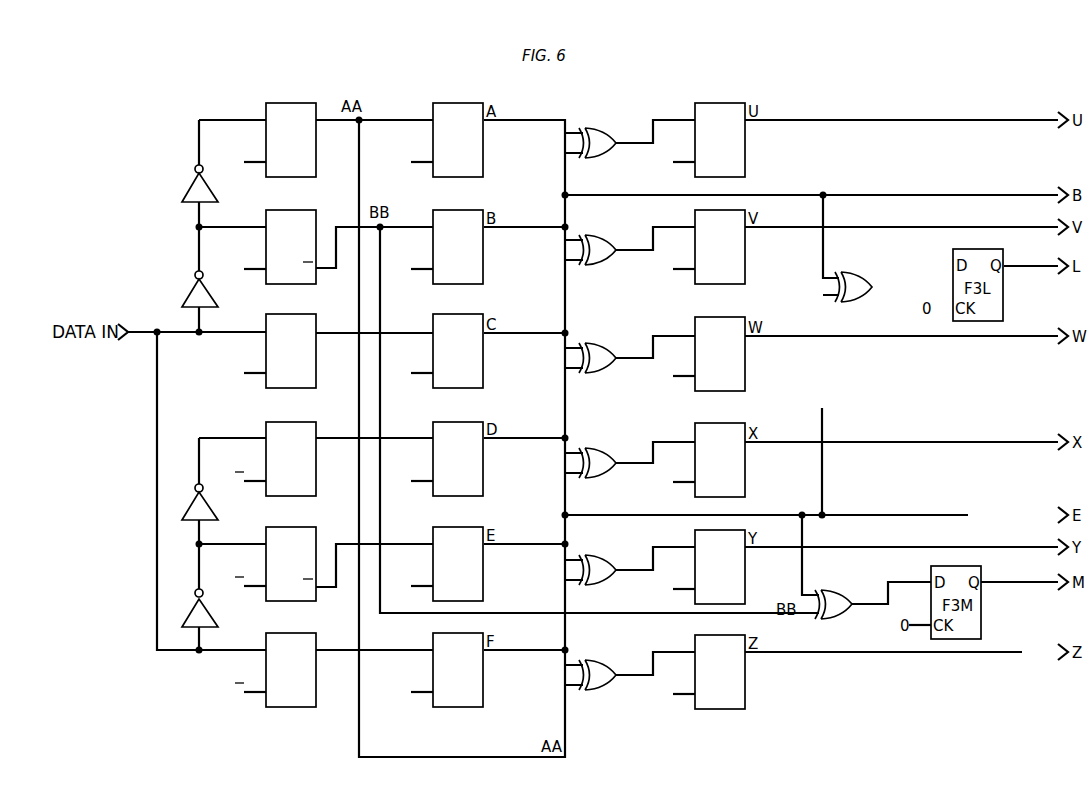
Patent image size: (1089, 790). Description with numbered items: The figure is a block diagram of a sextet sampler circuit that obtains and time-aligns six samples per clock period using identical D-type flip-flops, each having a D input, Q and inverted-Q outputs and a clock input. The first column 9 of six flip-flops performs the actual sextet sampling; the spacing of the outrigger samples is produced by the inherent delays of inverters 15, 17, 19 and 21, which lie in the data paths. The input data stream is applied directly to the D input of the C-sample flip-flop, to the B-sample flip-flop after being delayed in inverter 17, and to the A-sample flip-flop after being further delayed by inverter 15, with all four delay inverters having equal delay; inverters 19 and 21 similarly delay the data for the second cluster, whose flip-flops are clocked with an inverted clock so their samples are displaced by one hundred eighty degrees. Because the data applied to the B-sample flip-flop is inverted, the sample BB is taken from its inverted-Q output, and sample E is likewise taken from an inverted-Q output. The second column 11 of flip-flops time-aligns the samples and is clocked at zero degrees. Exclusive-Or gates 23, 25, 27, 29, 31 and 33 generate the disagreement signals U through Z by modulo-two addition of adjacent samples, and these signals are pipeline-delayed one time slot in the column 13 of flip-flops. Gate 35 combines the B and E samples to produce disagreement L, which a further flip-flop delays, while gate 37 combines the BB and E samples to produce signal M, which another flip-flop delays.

The first column of flip-flops 9 is at (290, 93).
The second column of flip-flops 11 is at (458, 93).
The column of flip-flops 13 is at (722, 93).
The inverter 15 is at (189, 185).
The inverter 17 is at (189, 291).
The inverter 19 is at (189, 504).
The inverter 21 is at (189, 609).
The Exclusive-Or gate 23 is at (605, 132).
The Exclusive-Or gate 25 is at (605, 239).
The Exclusive-Or gate 27 is at (605, 347).
The Exclusive-Or gate 29 is at (605, 452).
The Exclusive-Or gate 31 is at (605, 559).
The Exclusive-Or gate 33 is at (605, 664).
The gate 35 is at (854, 273).
The gate 37 is at (834, 590).